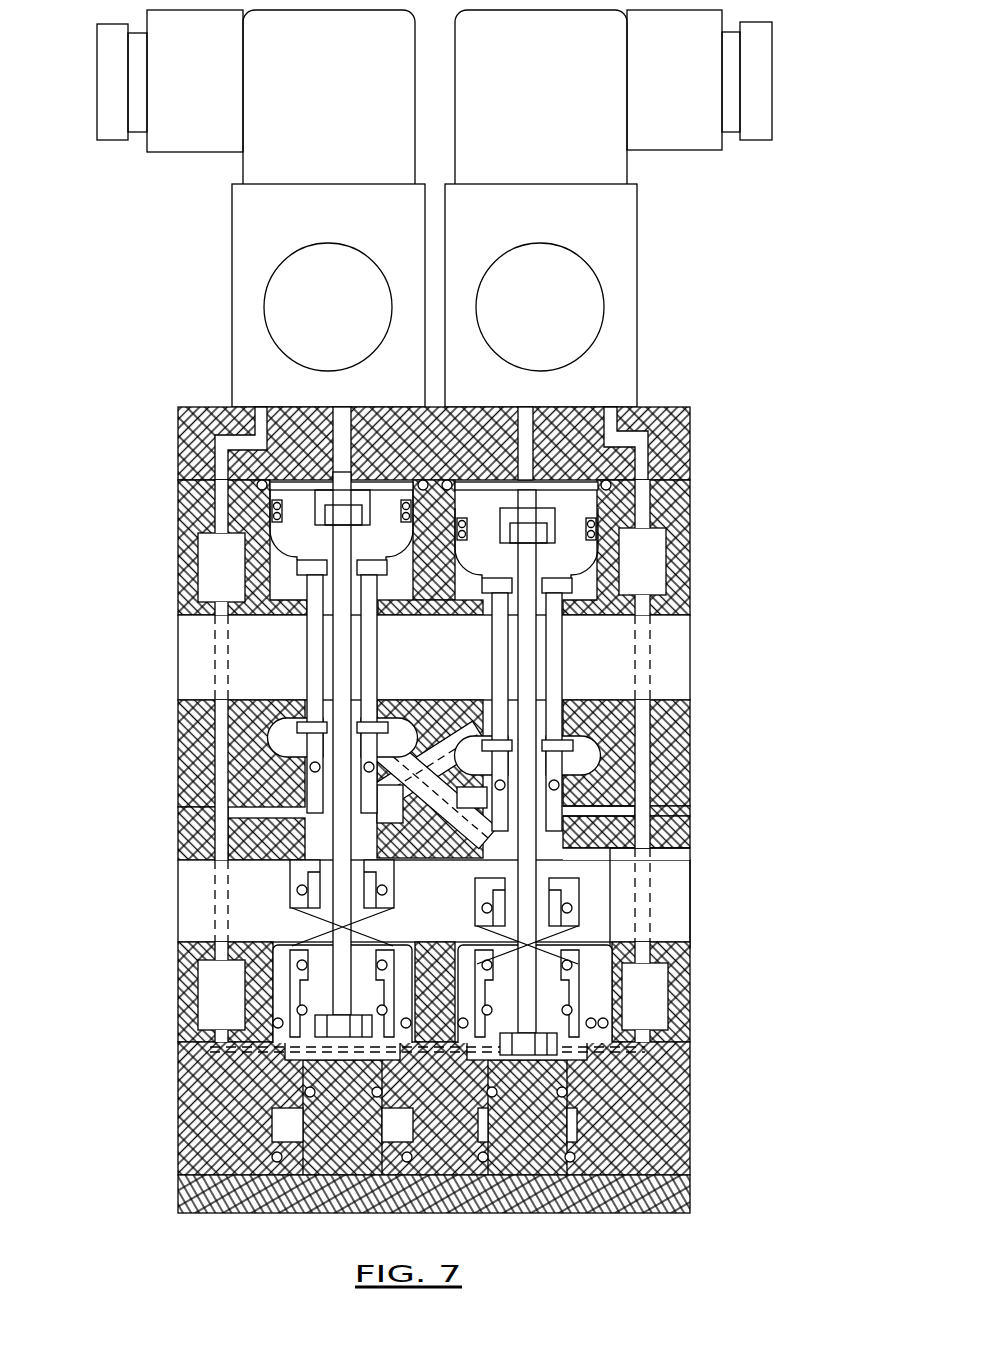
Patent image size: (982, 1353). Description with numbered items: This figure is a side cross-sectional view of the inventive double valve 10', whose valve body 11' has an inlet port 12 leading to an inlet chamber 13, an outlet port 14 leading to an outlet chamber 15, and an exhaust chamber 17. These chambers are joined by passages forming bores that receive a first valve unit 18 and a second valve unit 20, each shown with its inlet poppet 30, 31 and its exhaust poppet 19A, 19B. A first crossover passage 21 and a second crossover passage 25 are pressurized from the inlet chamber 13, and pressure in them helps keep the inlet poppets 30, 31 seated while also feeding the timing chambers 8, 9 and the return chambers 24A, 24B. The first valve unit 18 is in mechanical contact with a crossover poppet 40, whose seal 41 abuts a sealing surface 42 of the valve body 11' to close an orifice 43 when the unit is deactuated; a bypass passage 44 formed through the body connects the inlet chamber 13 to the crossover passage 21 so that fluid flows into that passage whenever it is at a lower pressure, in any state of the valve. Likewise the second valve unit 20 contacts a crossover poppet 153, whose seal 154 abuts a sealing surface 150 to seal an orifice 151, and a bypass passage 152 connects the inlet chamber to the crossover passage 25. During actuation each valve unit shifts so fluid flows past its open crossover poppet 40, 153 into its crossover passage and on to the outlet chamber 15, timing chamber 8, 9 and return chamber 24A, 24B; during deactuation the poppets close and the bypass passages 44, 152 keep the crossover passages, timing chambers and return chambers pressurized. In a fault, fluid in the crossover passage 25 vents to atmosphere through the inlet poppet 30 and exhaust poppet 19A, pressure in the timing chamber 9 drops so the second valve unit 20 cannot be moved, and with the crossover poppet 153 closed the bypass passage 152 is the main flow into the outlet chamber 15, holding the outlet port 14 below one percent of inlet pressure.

The double valve 10' is at (434, 208).
The valve body 11' is at (493, 438).
The timing chamber 8 is at (211, 553).
The timing chamber 9 is at (655, 544).
The inlet port 12 is at (684, 890).
The inlet chamber 13 is at (428, 936).
The outlet port 14 is at (689, 659).
The outlet chamber 15 is at (421, 669).
The exhaust chamber 17 is at (387, 596).
The first valve unit 18 is at (323, 650).
The exhaust poppet 19A is at (300, 582).
The exhaust poppet 19B is at (576, 598).
The second valve unit 20 is at (550, 670).
The first crossover passage 21 is at (383, 818).
The return chamber 24A is at (216, 988).
The return chamber 24B is at (655, 1000).
The second crossover passage 25 is at (457, 811).
The inlet poppet 30 is at (302, 716).
The inlet poppet 31 is at (487, 737).
The crossover poppet 40 is at (316, 864).
The seal 41 is at (311, 856).
The sealing surface 42 is at (307, 863).
The orifice 43 is at (300, 805).
The bypass passage 44 is at (408, 858).
The sealing surface 150 is at (563, 847).
The orifice 151 is at (563, 800).
The bypass passage 152 is at (463, 858).
The crossover poppet 153 is at (627, 892).
The seal 154 is at (571, 859).